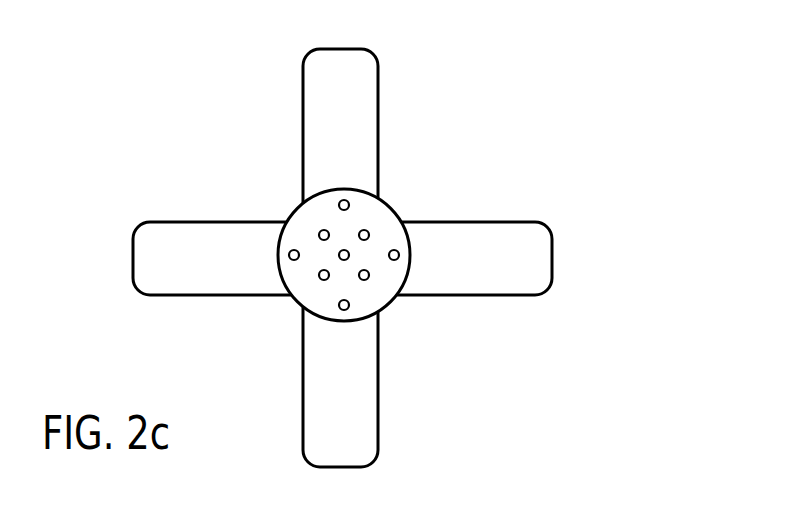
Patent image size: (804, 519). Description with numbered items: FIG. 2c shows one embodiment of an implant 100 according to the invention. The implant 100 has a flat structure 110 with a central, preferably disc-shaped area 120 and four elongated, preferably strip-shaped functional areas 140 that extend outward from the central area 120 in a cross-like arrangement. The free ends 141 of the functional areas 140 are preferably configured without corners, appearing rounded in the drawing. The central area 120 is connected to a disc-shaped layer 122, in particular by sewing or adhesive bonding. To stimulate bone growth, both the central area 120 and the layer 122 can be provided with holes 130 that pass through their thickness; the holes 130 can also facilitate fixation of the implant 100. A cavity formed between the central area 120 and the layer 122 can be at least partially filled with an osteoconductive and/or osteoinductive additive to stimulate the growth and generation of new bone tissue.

The implant 100 is at (524, 106).
The flat structure 110 is at (229, 221).
The central area 120 is at (293, 297).
The disc-shaped layer 122 is at (383, 290).
The holes 130 is at (368, 235).
The functional areas 140 is at (320, 85).
The free ends 141 is at (377, 52).